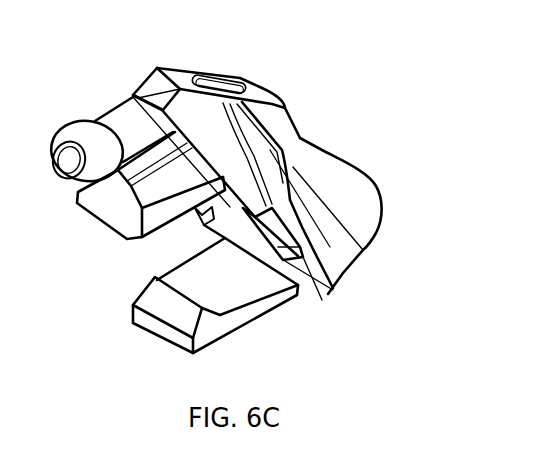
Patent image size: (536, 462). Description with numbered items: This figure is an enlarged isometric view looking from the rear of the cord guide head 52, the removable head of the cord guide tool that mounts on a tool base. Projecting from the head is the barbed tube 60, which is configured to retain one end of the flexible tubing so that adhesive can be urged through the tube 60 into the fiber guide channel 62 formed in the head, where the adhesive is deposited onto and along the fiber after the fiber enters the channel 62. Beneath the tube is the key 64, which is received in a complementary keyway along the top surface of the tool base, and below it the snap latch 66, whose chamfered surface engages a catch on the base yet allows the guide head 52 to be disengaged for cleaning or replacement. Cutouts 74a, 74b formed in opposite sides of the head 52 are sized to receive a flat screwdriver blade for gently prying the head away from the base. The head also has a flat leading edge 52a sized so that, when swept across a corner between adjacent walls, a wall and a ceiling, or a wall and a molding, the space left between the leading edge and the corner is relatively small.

The cord guide head 52 is at (383, 217).
The flat leading edge 52a is at (148, 70).
The barbed tube 60 is at (120, 113).
The fiber guide channel 62 is at (238, 78).
The key 64 is at (105, 208).
The snap latch 66 is at (225, 335).
The cutout 74a is at (295, 259).
The cutout 74b is at (200, 216).